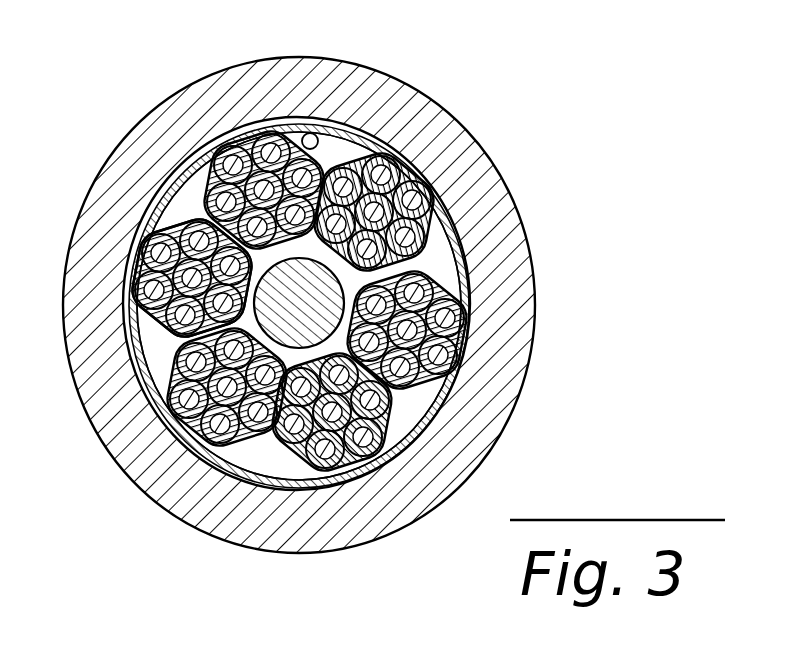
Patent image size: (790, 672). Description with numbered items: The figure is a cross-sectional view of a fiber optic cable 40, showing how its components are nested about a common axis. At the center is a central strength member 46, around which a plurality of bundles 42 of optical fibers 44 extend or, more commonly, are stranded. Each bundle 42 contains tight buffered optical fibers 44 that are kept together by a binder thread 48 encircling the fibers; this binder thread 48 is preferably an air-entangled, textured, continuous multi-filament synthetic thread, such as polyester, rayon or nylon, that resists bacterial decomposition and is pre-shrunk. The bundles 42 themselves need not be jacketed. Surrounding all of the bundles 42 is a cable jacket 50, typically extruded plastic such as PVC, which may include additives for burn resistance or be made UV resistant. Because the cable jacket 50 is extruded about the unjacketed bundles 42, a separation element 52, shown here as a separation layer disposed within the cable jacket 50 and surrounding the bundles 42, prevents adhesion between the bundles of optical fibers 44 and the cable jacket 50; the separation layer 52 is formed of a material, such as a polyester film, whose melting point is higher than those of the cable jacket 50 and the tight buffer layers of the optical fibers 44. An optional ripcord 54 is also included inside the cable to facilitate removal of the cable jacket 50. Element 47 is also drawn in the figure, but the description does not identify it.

The fiber optic cable 40 is at (335, 326).
The bundle of optical fibers 42 is at (166, 215).
The optical fibers 44 is at (470, 324).
The central strength member 46 is at (296, 338).
The bundle sheath 47 is at (153, 312).
The binder thread 48 is at (445, 405).
The cable jacket 50 is at (481, 166).
The separation element 52 is at (367, 120).
The ripcord 54 is at (311, 132).